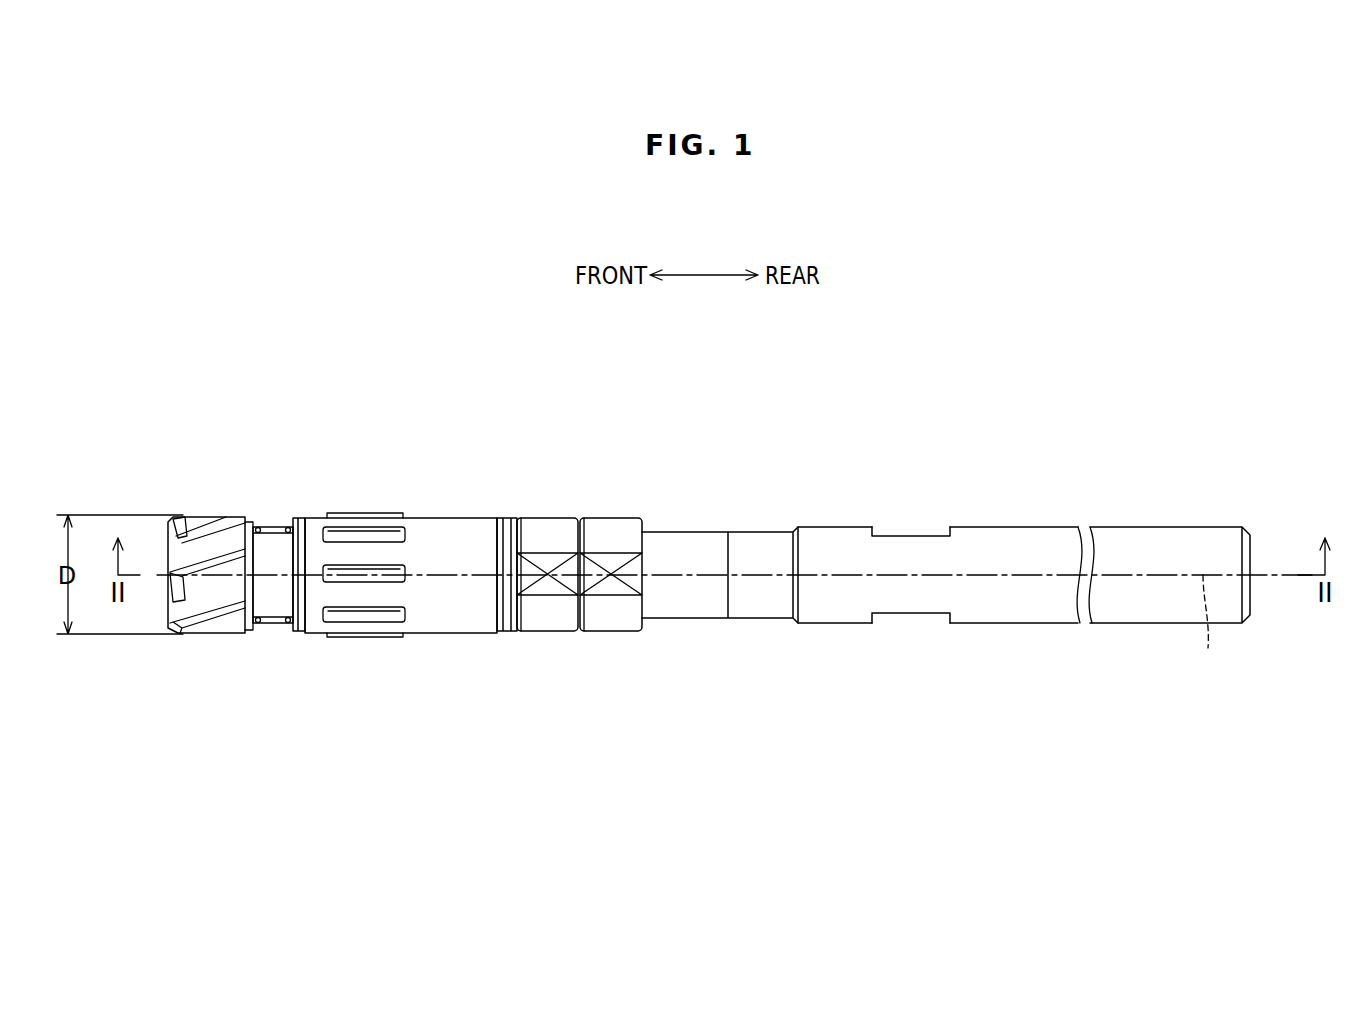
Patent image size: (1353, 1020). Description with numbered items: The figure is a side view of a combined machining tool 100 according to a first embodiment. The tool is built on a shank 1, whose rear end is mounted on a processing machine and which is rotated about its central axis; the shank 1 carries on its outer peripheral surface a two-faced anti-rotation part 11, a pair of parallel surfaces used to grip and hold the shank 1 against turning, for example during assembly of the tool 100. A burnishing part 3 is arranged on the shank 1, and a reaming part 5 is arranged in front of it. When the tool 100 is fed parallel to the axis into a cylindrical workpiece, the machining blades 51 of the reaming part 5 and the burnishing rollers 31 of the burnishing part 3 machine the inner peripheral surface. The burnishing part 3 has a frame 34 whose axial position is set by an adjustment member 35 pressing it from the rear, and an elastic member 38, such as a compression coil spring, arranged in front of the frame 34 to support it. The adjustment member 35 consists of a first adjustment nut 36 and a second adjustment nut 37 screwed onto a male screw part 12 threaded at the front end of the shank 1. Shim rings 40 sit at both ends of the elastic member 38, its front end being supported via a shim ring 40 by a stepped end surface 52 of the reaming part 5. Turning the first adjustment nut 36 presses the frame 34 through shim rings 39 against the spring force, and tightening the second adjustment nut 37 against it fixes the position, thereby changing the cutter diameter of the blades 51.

The combined machining tool 100 is at (853, 412).
The shank 1 is at (1051, 499).
The two-faced anti-rotation part 11 is at (906, 536).
The male screw part 12 is at (688, 530).
The burnishing part 3 is at (366, 482).
The burnishing rollers 31 is at (372, 613).
The frame 34 is at (458, 517).
The adjustment member 35 is at (633, 458).
The first adjustment nut 36 is at (550, 517).
The second adjustment nut 37 is at (598, 517).
The elastic member 38 is at (295, 525).
The shim rings 39 is at (516, 633).
The shim rings 40 is at (297, 630).
The reaming part 5 is at (209, 491).
The machining blades 51 is at (182, 515).
The stepped end surface 52 is at (253, 523).